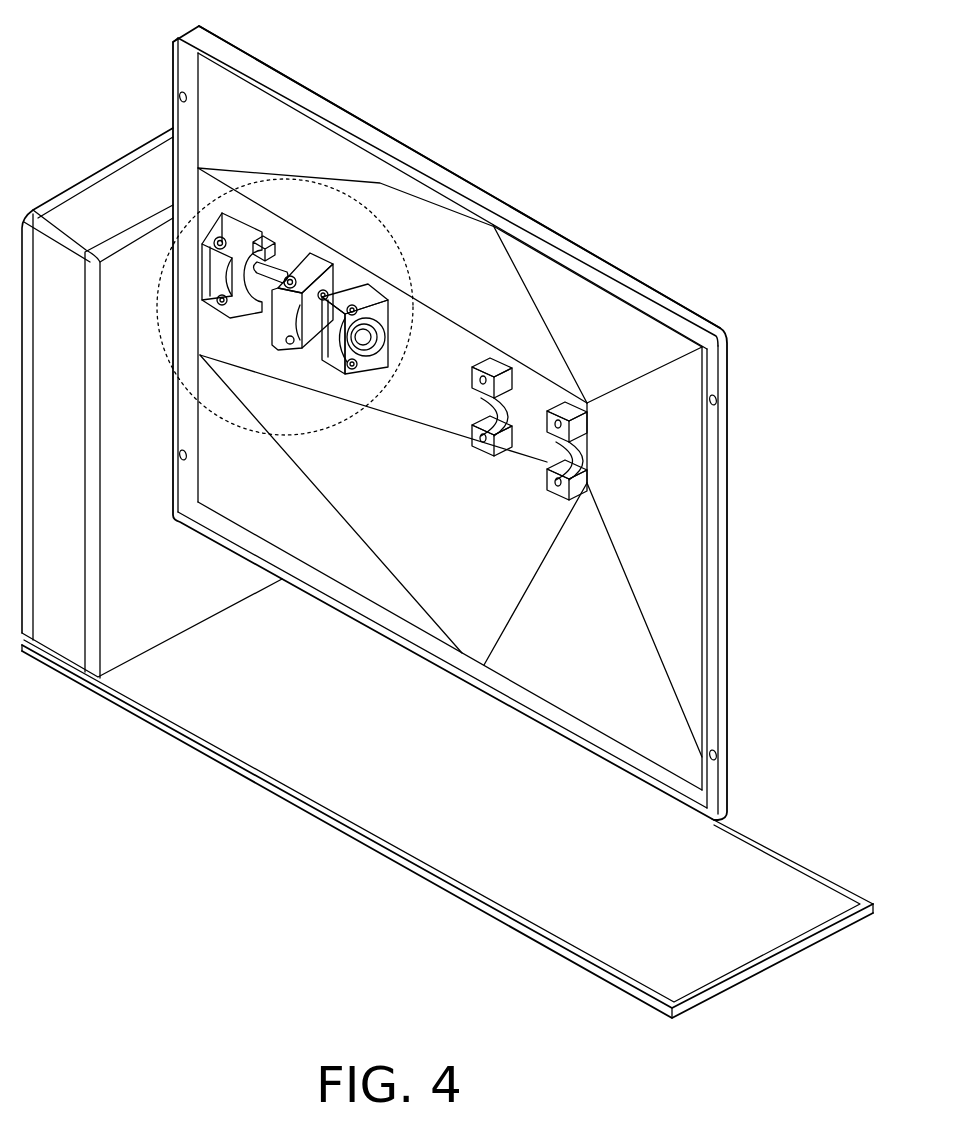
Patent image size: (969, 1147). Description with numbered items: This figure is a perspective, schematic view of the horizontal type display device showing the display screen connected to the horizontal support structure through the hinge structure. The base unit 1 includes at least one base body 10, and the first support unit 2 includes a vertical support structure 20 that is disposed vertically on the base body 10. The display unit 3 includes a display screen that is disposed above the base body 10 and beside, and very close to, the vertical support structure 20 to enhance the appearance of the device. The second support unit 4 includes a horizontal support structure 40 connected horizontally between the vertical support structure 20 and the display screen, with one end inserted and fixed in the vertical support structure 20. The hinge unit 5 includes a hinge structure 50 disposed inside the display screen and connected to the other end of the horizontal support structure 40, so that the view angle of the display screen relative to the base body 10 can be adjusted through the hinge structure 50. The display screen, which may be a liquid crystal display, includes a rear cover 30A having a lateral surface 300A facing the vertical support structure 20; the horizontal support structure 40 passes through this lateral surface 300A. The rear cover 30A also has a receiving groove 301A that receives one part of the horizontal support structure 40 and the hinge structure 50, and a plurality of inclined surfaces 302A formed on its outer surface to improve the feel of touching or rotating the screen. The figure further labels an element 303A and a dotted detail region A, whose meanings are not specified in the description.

The base unit 1 is at (812, 768).
The base body 10 is at (766, 886).
The first support unit 2 is at (38, 736).
The vertical support structure 20 is at (63, 630).
The display unit 3 is at (572, 240).
The rear cover 30A is at (663, 312).
The lateral surface 300A is at (173, 58).
The receiving groove 301A is at (437, 360).
The inclined surfaces 302A is at (728, 482).
The bottom rail of frame 303A is at (178, 192).
The second support unit 4 is at (300, 44).
The horizontal support structure 40 is at (266, 262).
The hinge unit 5 is at (386, 78).
The hinge structure 50 is at (350, 290).
The enlarged detail region A is at (312, 430).